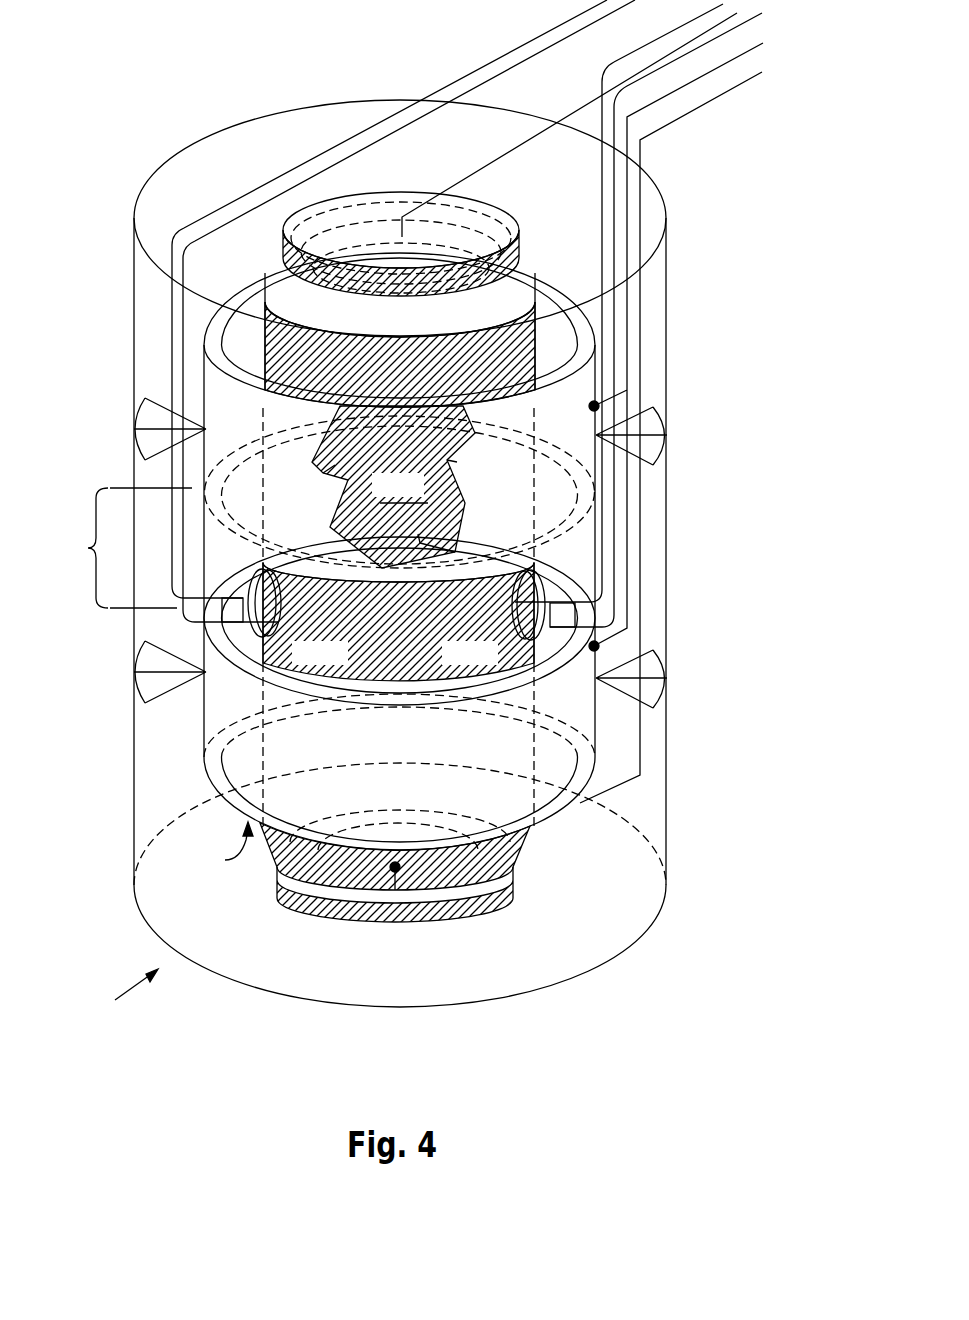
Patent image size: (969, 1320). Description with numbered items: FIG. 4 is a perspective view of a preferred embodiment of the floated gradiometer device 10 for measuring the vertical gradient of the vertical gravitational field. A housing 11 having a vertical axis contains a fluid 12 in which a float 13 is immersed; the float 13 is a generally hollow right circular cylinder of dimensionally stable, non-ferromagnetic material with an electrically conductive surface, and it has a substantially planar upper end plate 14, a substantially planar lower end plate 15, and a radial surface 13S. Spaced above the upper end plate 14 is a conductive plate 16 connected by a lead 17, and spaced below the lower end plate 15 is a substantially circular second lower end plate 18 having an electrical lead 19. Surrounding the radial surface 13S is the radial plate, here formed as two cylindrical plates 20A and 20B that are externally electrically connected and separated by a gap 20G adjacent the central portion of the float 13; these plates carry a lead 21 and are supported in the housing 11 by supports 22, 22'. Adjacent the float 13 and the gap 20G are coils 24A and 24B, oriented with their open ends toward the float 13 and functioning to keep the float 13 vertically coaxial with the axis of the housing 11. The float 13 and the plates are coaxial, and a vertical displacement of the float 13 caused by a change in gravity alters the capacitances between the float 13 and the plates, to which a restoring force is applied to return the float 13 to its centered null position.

The electrochemical device 10 is at (120, 993).
The housing 11 is at (134, 383).
The fluid 12 is at (160, 331).
The float 13 is at (563, 352).
The radial surface 13S is at (393, 487).
The first upper end plate 14 is at (303, 292).
The lower end plate 15 is at (221, 852).
The plate 16 is at (400, 299).
The lead 17 is at (582, 118).
The second lower end plate 18 is at (440, 922).
The electrical lead 19 is at (600, 793).
The cylindrical plate 20A is at (510, 761).
The cylindrical plate 20B is at (532, 482).
The gap 20G is at (112, 548).
The lead 21 is at (622, 363).
The supports 22 is at (707, 551).
The ports 22' is at (399, 552).
The coil 24A is at (285, 618).
The coil 24B is at (602, 335).